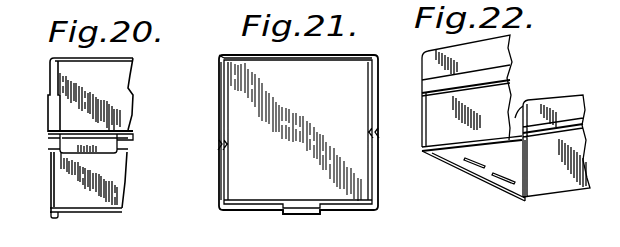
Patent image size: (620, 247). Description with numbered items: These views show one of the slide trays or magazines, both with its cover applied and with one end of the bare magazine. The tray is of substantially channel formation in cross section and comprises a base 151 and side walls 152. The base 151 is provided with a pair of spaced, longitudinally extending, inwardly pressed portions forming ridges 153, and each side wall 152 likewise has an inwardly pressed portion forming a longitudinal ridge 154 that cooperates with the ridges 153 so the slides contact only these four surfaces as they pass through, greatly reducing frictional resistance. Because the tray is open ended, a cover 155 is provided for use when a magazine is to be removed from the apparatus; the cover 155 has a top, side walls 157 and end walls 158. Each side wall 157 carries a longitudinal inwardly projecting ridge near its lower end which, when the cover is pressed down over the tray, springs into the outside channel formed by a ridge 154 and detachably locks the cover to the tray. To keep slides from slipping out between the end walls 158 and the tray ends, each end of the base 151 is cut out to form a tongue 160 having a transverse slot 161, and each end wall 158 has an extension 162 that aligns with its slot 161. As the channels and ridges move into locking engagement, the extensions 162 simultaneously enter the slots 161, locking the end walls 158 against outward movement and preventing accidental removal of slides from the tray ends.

In FIG. 22, the base 151 is at (502, 157).
In FIG. 20, the side wall 152 is at (60, 194).
In FIG. 21, the side wall 152 is at (380, 113).
In FIG. 22, the side wall 152 is at (428, 108).
In FIG. 21, the ridge 153 is at (355, 211).
In FIG. 20, the ridge 154 is at (128, 141).
In FIG. 22, the ridge 154 is at (497, 74).
In FIG. 21, the cover 155 is at (240, 55).
In FIG. 21, the side wall 157 is at (218, 97).
In FIG. 20, the end wall 158 is at (72, 141).
In FIG. 21, the end wall 158 is at (245, 168).
In FIG. 22, the tongue 160 is at (483, 180).
In FIG. 22, the transverse slot 161 is at (474, 167).
In FIG. 20, the extension 162 is at (58, 217).
In FIG. 21, the extension 162 is at (292, 214).